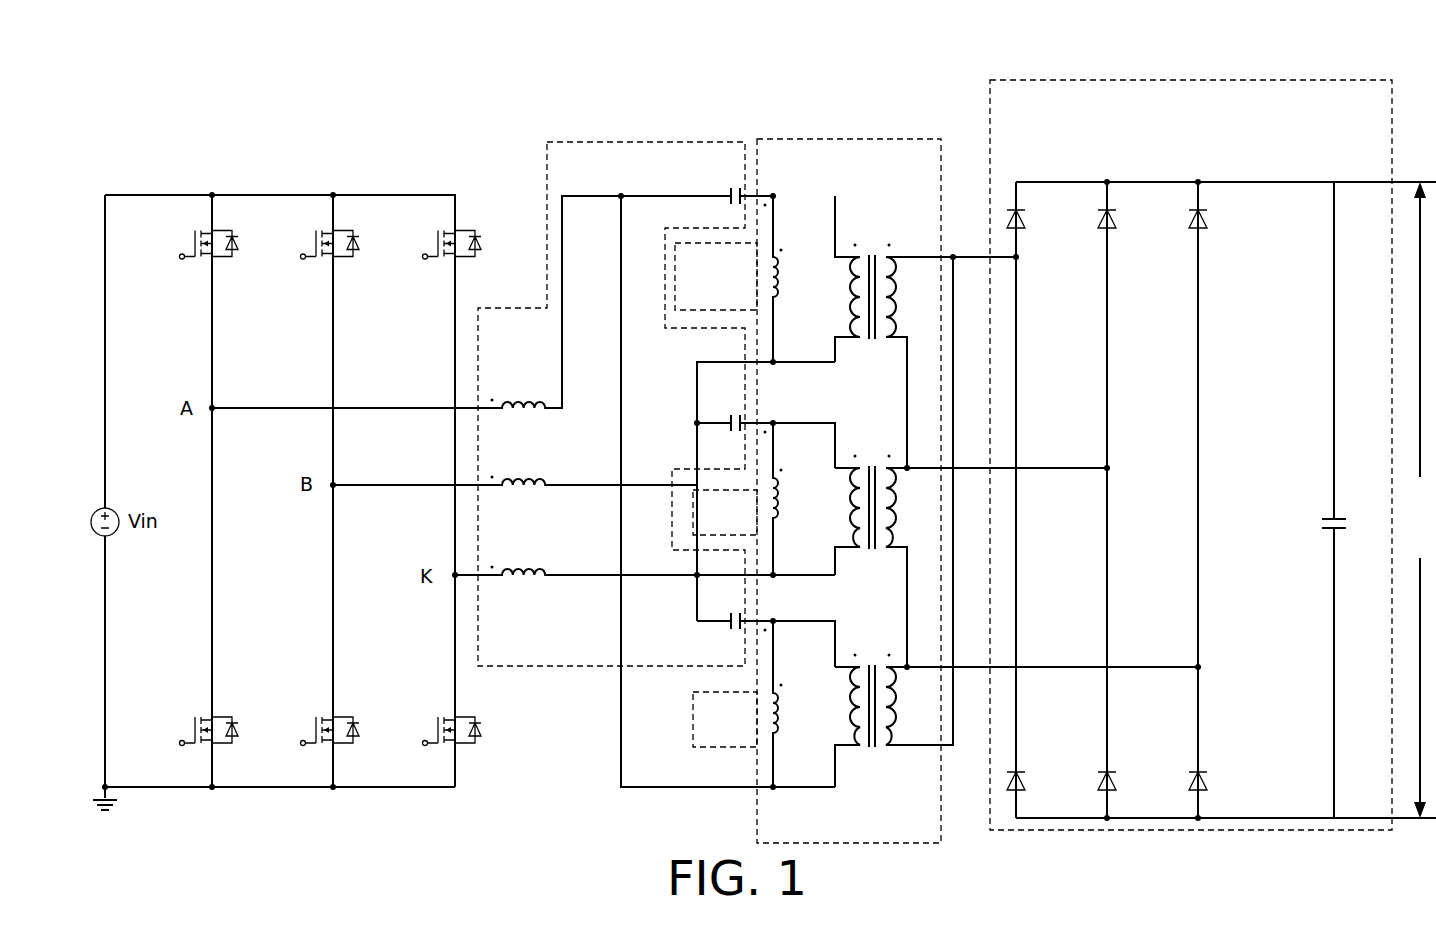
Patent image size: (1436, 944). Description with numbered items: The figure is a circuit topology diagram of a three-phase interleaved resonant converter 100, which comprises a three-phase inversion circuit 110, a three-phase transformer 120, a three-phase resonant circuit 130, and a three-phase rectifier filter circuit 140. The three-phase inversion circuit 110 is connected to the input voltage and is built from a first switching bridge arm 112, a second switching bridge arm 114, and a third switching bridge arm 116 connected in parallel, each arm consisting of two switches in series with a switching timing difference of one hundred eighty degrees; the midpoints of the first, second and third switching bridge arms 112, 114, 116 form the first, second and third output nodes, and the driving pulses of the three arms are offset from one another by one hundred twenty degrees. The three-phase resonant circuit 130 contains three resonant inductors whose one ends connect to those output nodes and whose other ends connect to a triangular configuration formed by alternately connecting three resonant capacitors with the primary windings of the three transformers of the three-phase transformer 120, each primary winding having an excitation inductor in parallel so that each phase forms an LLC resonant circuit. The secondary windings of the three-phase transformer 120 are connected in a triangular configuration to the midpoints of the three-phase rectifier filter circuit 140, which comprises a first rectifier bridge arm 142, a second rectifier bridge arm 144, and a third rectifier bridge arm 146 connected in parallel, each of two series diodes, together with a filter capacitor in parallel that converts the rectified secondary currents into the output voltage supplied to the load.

The three-phase interleaved resonant converter 100 is at (104, 30).
The three-phase inversion circuit 110 is at (423, 92).
The first switching bridge arm 112 is at (210, 175).
The second switching bridge arm 114 is at (332, 175).
The third switching bridge arm 116 is at (452, 175).
The three-phase transformer 120 is at (870, 139).
The three-phase resonant circuit 130 is at (637, 142).
The three-phase rectifier filter circuit 140 is at (1158, 80).
The first rectifier bridge arm 142 is at (1006, 167).
The second rectifier bridge arm 144 is at (1106, 167).
The third rectifier bridge arm 146 is at (1201, 167).